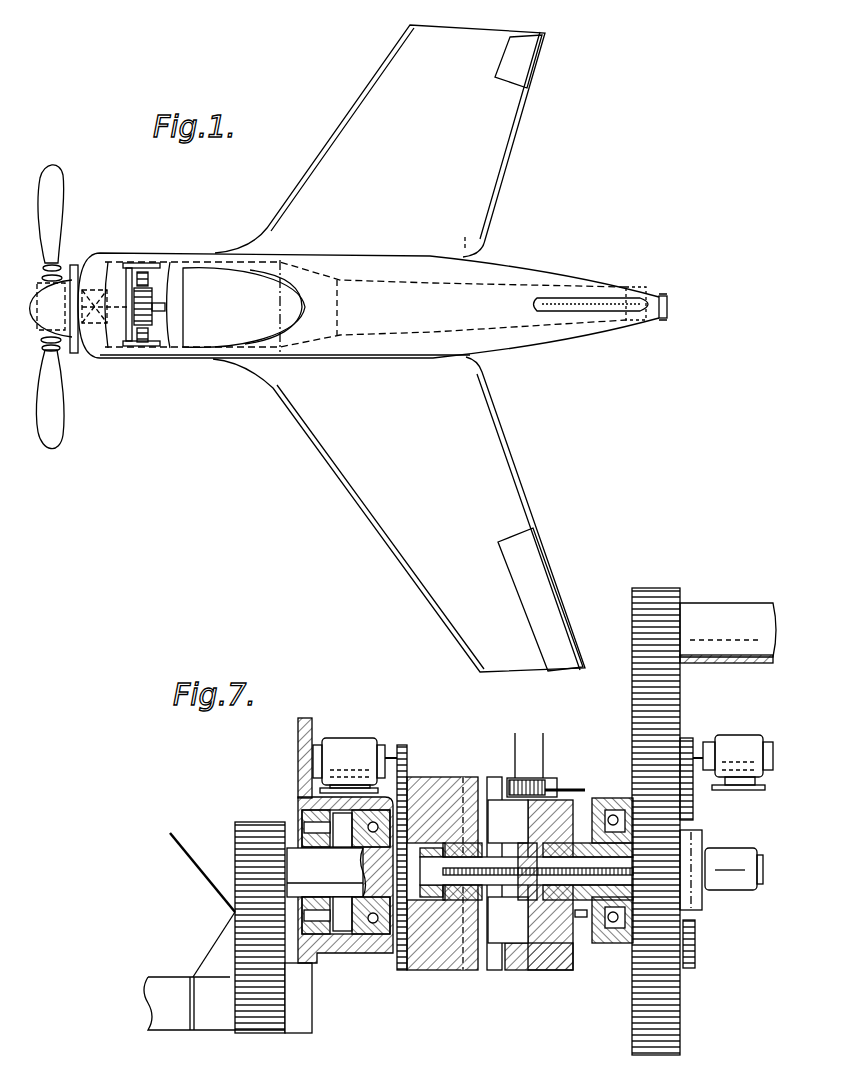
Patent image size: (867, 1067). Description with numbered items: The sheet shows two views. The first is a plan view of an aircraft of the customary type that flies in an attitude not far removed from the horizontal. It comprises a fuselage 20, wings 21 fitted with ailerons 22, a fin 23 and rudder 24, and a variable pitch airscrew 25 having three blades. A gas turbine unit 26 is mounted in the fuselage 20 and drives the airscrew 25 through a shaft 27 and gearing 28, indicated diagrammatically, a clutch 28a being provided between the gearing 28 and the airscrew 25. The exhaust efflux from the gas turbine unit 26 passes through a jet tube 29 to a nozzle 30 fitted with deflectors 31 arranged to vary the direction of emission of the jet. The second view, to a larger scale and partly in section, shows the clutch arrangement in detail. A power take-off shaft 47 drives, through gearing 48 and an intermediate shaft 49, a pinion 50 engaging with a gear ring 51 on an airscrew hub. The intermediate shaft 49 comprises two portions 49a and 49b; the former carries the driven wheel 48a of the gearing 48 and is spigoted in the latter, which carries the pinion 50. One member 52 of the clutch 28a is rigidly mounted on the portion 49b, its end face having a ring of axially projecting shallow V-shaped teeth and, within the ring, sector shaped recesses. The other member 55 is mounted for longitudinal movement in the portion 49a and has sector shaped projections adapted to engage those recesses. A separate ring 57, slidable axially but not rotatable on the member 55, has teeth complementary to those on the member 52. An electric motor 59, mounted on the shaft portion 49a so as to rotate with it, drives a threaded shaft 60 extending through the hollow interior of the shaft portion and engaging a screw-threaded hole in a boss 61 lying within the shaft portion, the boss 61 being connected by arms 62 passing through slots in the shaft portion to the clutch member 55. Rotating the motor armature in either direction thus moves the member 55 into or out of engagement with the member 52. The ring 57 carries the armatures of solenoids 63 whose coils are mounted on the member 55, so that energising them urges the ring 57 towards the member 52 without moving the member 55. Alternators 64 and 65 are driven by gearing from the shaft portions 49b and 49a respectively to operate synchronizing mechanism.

In FIG. 1, the fuselage 20 is at (413, 253).
In FIG. 1, the wings 21 is at (341, 125).
In FIG. 1, the ailerons 22 is at (535, 87).
In FIG. 1, the fin 23 is at (586, 302).
In FIG. 1, the rudder 24 is at (641, 293).
In FIG. 1, the variable pitch airscrew 25 is at (60, 180).
In FIG. 1, the gas turbine unit 26 is at (228, 285).
In FIG. 1, the shaft 27 is at (162, 300).
In FIG. 1, the gearing 28 is at (147, 283).
In FIG. 1, the clutch 28a is at (107, 295).
In FIG. 7, the clutch 28a is at (492, 972).
In FIG. 1, the jet tube 29 is at (527, 283).
In FIG. 1, the nozzle 30 is at (668, 310).
In FIG. 1, the deflectors 31 is at (663, 294).
In FIG. 7, the power take-off shaft 47 is at (706, 607).
In FIG. 7, the gearing 48 is at (680, 675).
In FIG. 7, the driven wheel 48a is at (683, 1003).
In FIG. 7, the intermediate shaft 49 is at (385, 903).
In FIG. 7, the shaft portion 49a is at (585, 900).
In FIG. 7, the shaft portion 49b is at (360, 920).
In FIG. 7, the pinion 50 is at (255, 822).
In FIG. 7, the gear ring 51 is at (230, 977).
In FIG. 7, the clutch member 52 is at (443, 777).
In FIG. 7, the clutch member 55 is at (557, 960).
In FIG. 7, the ring 57 is at (490, 777).
In FIG. 7, the electric motor 59 is at (733, 847).
In FIG. 7, the threaded shaft 60 is at (573, 867).
In FIG. 7, the boss 61 is at (522, 888).
In FIG. 7, the arms 62 is at (523, 850).
In FIG. 7, the solenoids 63 is at (533, 778).
In FIG. 7, the alternator 64 is at (358, 738).
In FIG. 7, the alternator 65 is at (747, 735).